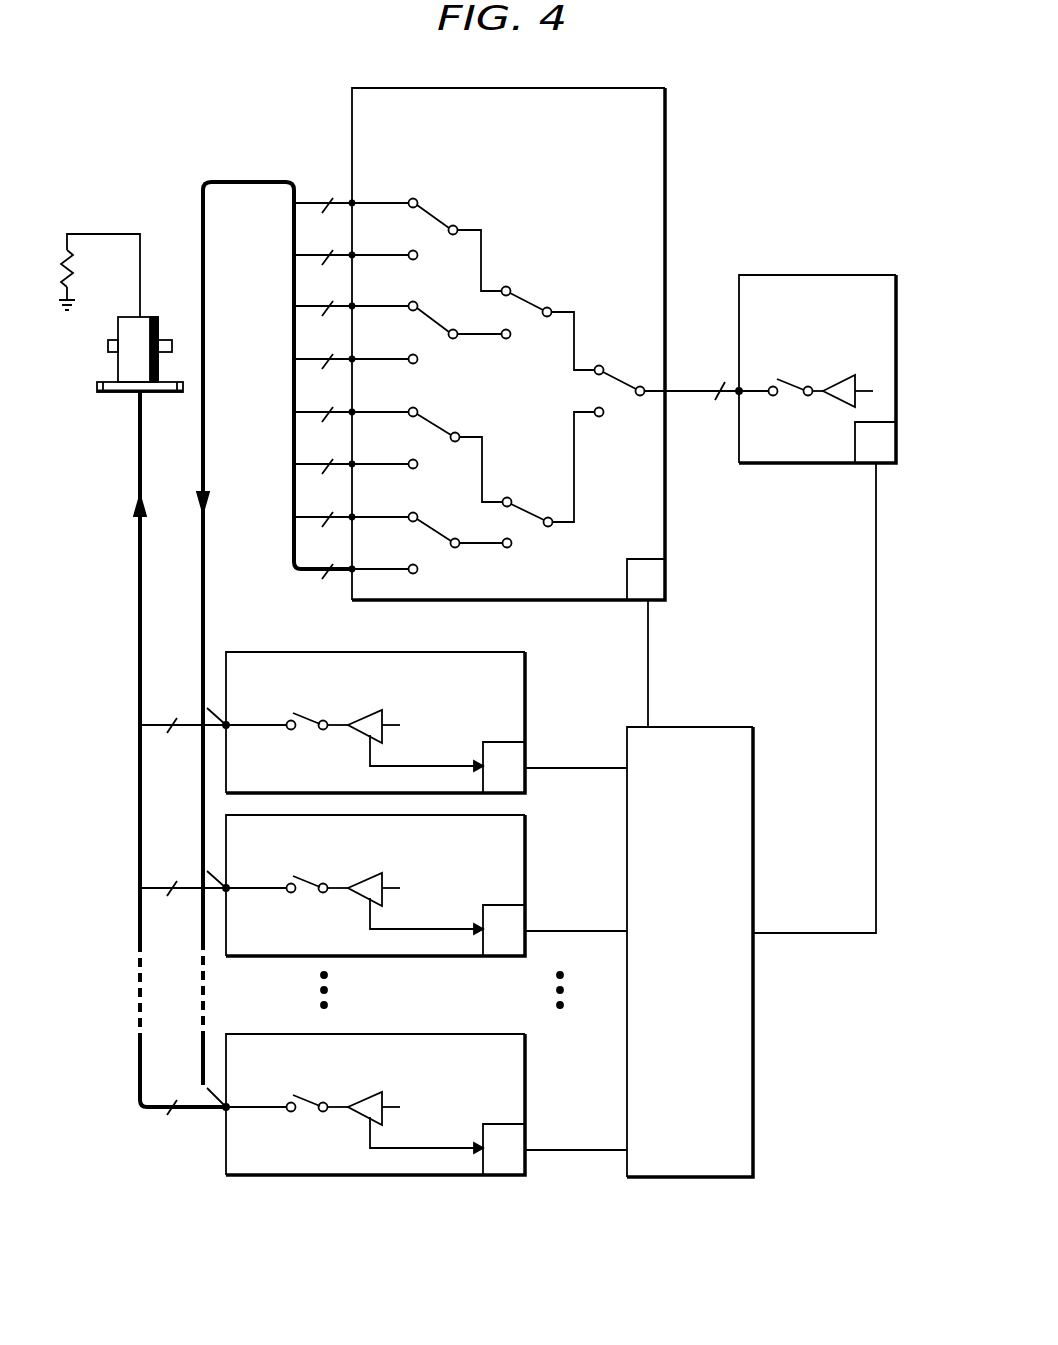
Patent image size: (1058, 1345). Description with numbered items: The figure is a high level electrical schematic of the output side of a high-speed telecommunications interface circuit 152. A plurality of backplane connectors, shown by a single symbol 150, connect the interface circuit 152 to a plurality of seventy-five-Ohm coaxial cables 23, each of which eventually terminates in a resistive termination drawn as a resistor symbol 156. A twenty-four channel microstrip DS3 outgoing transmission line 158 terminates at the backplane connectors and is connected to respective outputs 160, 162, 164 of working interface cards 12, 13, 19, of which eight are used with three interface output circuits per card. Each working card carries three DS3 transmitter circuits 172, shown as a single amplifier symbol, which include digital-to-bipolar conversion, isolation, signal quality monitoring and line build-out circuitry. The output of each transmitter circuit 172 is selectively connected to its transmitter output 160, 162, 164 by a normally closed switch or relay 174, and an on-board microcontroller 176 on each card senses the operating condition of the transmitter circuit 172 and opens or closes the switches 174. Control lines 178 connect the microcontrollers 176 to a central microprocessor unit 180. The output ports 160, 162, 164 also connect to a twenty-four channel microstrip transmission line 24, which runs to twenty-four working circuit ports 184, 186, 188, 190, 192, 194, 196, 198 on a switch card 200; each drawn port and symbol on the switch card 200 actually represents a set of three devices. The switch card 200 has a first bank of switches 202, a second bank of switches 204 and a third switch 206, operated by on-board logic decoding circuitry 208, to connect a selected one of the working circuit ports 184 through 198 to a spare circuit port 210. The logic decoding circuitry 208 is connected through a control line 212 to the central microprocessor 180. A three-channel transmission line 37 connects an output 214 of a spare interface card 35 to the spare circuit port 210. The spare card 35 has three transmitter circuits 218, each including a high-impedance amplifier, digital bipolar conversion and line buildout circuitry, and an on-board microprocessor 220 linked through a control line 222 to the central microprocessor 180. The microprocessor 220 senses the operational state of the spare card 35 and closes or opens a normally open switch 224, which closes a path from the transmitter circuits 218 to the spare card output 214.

The working interface card 12 is at (300, 651).
The working interface card 13 is at (375, 912).
The working interface card 19 is at (375, 1132).
The coaxial cable 23 is at (96, 232).
The microstrip transmission line 24 is at (200, 207).
The spare interface card 35 is at (775, 465).
The three-channel transmission line 37 is at (700, 388).
The backplane connector 150 is at (150, 315).
The interface circuit 152 is at (280, 118).
The resistive termination 156 is at (73, 265).
The outgoing transmission line 158 is at (150, 423).
The transmitter output 160 is at (227, 724).
The transmitter output 162 is at (244, 873).
The transmitter output 164 is at (254, 1092).
The DS3 transmitter circuit 172 is at (384, 723).
The normally closed switch 174 is at (299, 735).
The on-board microcontroller 176 is at (526, 749).
The control line 178 is at (576, 959).
The central microprocessor unit 180 is at (708, 963).
The working circuit port 184 is at (370, 191).
The working circuit port 186 is at (370, 243).
The working circuit port 188 is at (370, 294).
The working circuit port 190 is at (370, 347).
The working circuit port 192 is at (370, 400).
The working circuit port 194 is at (370, 452).
The working circuit port 196 is at (370, 505).
The working circuit port 198 is at (370, 557).
The switch card 200 is at (614, 87).
The first bank of switches 202 is at (446, 188).
The second bank of switches 204 is at (534, 272).
The third switch 206 is at (624, 356).
The on-board logic decoding circuitry 208 is at (667, 584).
The spare circuit port 210 is at (670, 394).
The control line 212 is at (648, 668).
The spare card output 214 is at (740, 390).
The transmitter circuit 218 is at (840, 379).
The on-board microprocessor 220 is at (865, 465).
The control line 222 is at (810, 935).
The normally open switch 224 is at (788, 395).